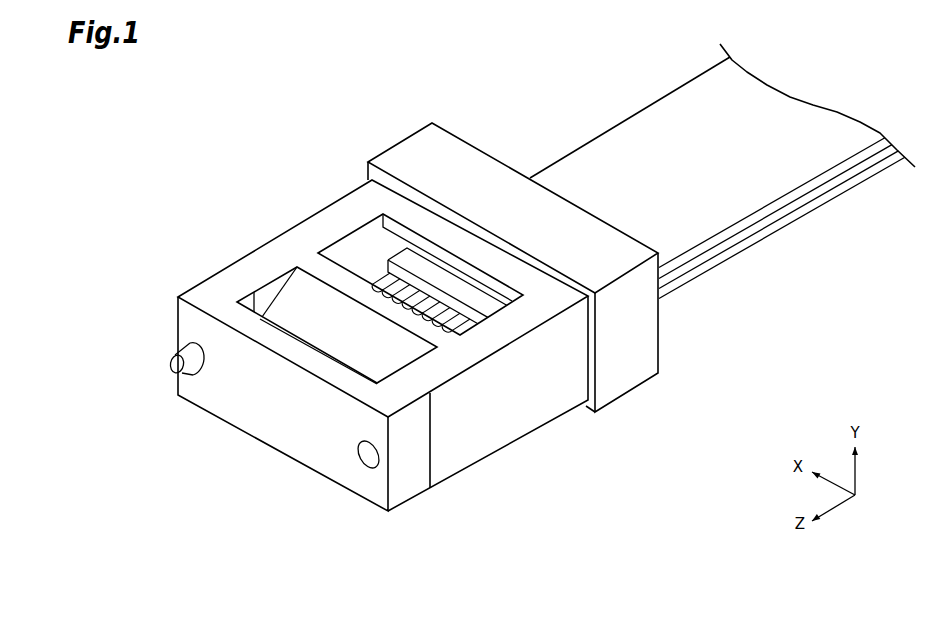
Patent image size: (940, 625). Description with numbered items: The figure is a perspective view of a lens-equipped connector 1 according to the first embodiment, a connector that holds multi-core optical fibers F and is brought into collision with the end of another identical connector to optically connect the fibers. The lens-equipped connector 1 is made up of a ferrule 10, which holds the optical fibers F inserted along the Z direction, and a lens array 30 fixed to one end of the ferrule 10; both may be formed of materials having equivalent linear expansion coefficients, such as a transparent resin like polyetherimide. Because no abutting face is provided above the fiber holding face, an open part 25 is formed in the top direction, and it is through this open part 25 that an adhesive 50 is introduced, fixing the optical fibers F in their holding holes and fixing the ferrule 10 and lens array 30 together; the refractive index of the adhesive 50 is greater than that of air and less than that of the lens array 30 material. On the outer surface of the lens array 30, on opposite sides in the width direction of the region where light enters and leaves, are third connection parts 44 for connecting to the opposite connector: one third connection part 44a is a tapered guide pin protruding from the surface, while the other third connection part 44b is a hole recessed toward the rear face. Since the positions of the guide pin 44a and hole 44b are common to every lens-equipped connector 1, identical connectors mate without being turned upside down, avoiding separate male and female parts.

The lens-equipped connector 1 is at (357, 302).
The ferrule 10 is at (288, 232).
The open part 25 is at (311, 285).
The lens array 30 is at (198, 282).
The third connection parts 44 is at (220, 445).
The third connection part (guide pin) 44a is at (171, 355).
The third connection part (hole) 44b is at (372, 460).
The adhesive 50 is at (287, 328).
The optical fibers F is at (614, 125).